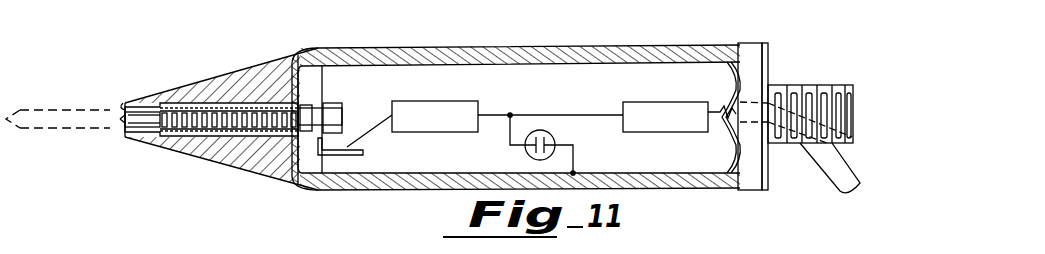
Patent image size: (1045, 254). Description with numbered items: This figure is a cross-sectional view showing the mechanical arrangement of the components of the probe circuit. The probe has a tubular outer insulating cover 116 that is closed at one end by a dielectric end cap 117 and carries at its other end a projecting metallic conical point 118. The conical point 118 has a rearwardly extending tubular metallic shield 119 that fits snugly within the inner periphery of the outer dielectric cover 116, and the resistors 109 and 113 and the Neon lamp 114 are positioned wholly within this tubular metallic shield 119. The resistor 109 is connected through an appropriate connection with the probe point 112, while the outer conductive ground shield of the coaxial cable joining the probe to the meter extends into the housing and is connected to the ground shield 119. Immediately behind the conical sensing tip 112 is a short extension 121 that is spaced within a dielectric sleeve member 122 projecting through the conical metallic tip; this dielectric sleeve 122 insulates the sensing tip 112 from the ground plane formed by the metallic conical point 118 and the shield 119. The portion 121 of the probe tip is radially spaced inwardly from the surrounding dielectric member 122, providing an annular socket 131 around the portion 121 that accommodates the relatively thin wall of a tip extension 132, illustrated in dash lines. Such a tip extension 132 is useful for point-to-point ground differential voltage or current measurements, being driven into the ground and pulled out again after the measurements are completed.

The resistor 109 is at (455, 112).
The probe point 112 is at (123, 120).
The resistor 113 is at (668, 112).
The Neon lamp 114 is at (553, 138).
The tubular outer insulating cover 116 is at (515, 47).
The dielectric end cap 117 is at (753, 75).
The metallic conical point 118 is at (255, 55).
The tubular metallic shield 119 is at (400, 66).
The short extension of the probe point 121 is at (152, 120).
The dielectric sleeve member 122 is at (205, 130).
The annular socket 131 is at (127, 110).
The tip extension 132 is at (50, 118).